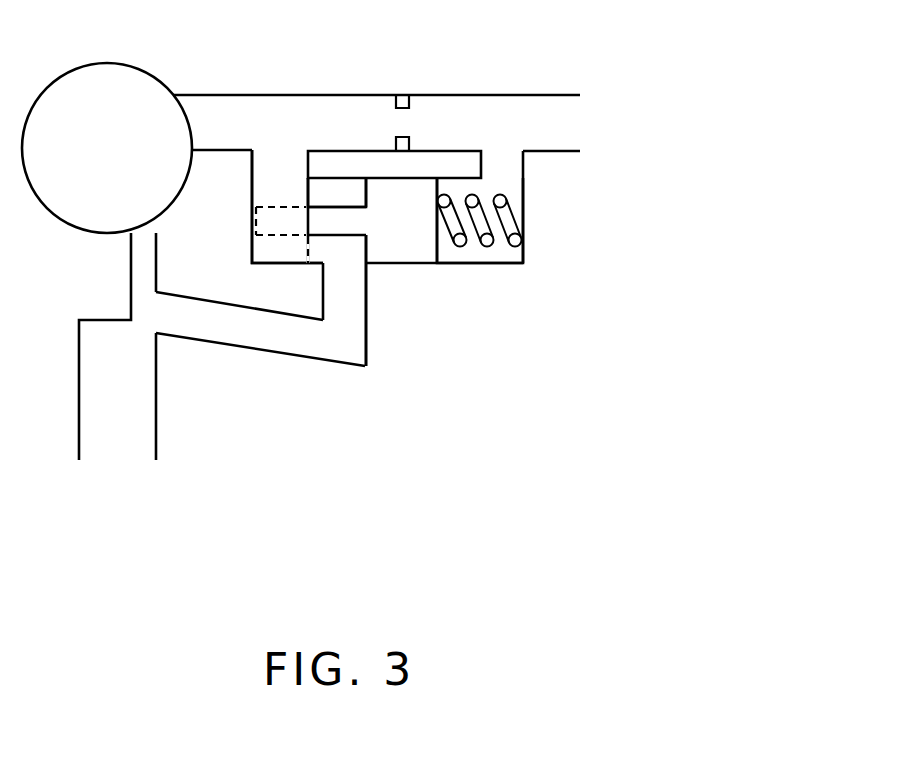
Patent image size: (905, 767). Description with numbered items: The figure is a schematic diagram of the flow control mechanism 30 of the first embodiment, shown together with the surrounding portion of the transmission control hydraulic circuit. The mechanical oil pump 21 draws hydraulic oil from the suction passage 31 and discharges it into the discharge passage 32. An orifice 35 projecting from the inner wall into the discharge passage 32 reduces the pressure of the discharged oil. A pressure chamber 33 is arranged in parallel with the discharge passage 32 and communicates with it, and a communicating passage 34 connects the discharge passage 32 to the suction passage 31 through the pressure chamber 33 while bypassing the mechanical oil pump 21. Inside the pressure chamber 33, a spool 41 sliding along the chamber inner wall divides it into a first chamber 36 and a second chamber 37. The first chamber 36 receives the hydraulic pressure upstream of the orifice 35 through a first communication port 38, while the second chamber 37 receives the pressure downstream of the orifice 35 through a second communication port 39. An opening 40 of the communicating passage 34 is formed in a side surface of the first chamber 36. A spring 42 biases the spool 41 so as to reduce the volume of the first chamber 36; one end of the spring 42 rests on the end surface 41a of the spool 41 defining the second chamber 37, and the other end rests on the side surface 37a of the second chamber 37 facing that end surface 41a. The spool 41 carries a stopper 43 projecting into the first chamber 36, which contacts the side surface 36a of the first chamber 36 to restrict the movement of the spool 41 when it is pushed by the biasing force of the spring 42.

The mechanical oil pump 21 is at (93, 83).
The flow control mechanism 30 is at (415, 282).
The suction passage 31 is at (97, 395).
The discharge passage 32 is at (235, 110).
The pressure chamber 33 is at (448, 265).
The communicating passage 34 is at (188, 332).
The orifice 35 is at (402, 93).
The first chamber 36 is at (276, 250).
The side surface of the first chamber 36a is at (250, 183).
The second chamber 37 is at (497, 253).
The side surface of the second chamber 37a is at (525, 208).
The first communication port 38 is at (277, 150).
The second communication port 39 is at (500, 152).
The opening 40 is at (342, 263).
The spool 41 is at (385, 247).
The end surface of the spool 41a is at (437, 187).
The spring 42 is at (465, 245).
The stopper 43 is at (335, 222).